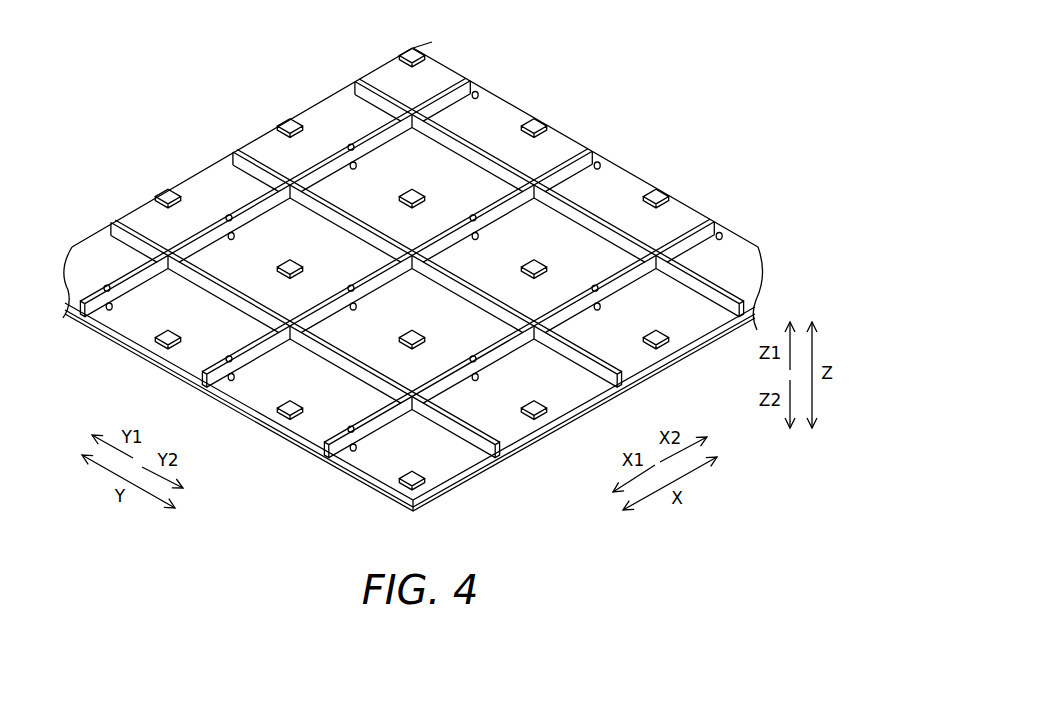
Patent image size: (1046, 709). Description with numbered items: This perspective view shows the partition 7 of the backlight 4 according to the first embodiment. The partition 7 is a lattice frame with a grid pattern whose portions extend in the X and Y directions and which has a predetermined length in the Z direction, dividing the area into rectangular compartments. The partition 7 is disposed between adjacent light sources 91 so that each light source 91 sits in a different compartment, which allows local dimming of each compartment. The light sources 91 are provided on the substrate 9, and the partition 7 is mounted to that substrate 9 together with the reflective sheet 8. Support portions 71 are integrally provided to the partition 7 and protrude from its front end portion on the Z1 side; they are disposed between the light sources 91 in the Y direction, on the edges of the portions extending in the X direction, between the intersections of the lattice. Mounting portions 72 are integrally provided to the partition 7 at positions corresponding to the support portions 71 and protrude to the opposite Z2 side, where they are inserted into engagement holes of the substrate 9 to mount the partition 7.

The backlight 4 is at (580, 43).
The partition 7 is at (576, 141).
The support portion 71 is at (352, 143).
The mounting portion 72 is at (350, 164).
The reflective sheet 8 is at (142, 353).
The substrate 9 is at (168, 369).
The light source 91 is at (413, 190).